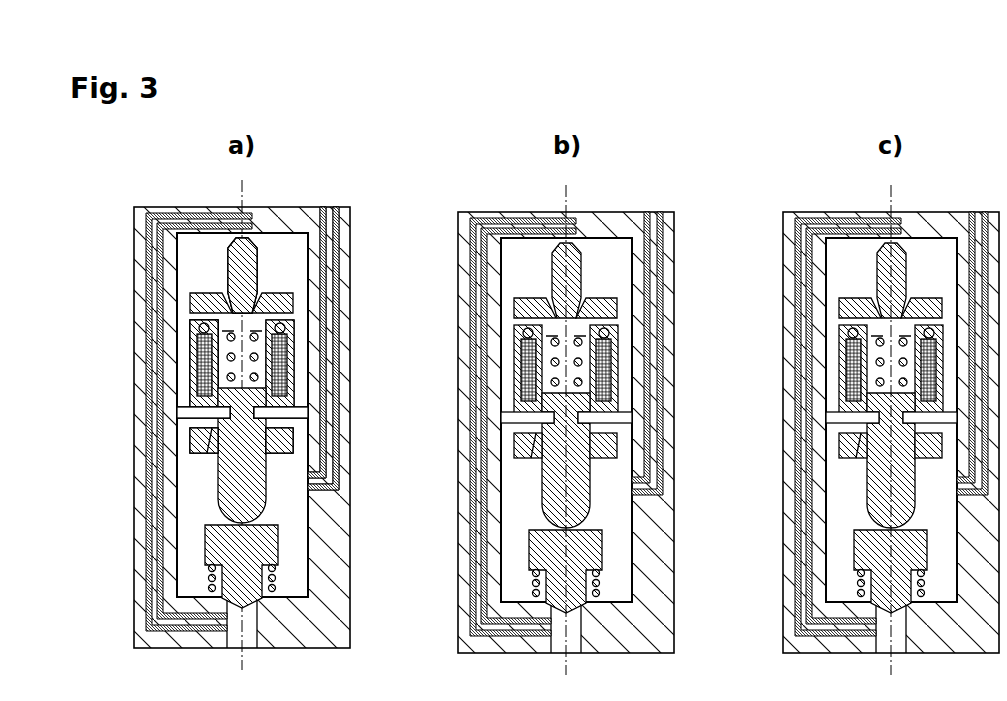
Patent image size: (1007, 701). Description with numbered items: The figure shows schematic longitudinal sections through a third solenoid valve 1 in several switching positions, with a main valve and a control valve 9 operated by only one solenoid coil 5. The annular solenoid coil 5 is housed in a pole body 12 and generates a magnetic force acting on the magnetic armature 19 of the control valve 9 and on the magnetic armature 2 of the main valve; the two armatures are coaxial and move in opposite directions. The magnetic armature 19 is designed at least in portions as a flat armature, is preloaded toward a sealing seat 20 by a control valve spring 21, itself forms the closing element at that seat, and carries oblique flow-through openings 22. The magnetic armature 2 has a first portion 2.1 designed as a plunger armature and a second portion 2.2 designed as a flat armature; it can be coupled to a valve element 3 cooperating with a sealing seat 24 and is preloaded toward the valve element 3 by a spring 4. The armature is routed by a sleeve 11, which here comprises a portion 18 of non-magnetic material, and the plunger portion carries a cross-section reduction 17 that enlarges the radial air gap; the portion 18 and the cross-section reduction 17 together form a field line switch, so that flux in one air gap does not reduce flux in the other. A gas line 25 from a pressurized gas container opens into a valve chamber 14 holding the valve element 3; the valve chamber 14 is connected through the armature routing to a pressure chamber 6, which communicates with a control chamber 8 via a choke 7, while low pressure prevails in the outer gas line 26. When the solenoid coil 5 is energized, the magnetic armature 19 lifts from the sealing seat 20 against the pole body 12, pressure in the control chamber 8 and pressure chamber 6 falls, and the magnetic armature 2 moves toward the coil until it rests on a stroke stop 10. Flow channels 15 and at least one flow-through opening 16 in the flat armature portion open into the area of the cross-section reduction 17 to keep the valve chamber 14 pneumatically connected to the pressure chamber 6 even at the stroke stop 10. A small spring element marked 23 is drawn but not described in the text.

The solenoid valve 1 is at (118, 296).
The magnetic armature 2 is at (180, 410).
The first portion 2.1 is at (242, 412).
The second portion 2.2 is at (195, 440).
The valve element 3 is at (206, 548).
The spring 4 is at (205, 358).
The solenoid coil 5 is at (200, 372).
The pressure chamber 6 is at (198, 338).
The choke 7 is at (270, 346).
The control chamber 8 is at (296, 252).
The control valve 9 is at (250, 268).
The stroke stop 10 is at (286, 432).
The sleeve 11 is at (274, 368).
The pole body 12 is at (242, 356).
The valve chamber 14 is at (290, 528).
The flow channel 15 is at (325, 471).
The flow-through opening 16 is at (226, 458).
The cross-section reduction 17 is at (316, 486).
The portion 18 is at (214, 380).
The magnetic armature 19 is at (242, 275).
The sealing seat 20 is at (226, 254).
The control valve spring 21 is at (262, 328).
The flow-through openings 22 is at (218, 305).
The return spring 23 is at (208, 582).
The sealing seat 24 is at (278, 585).
The gas line 25 is at (332, 238).
The gas line 26 is at (152, 625).